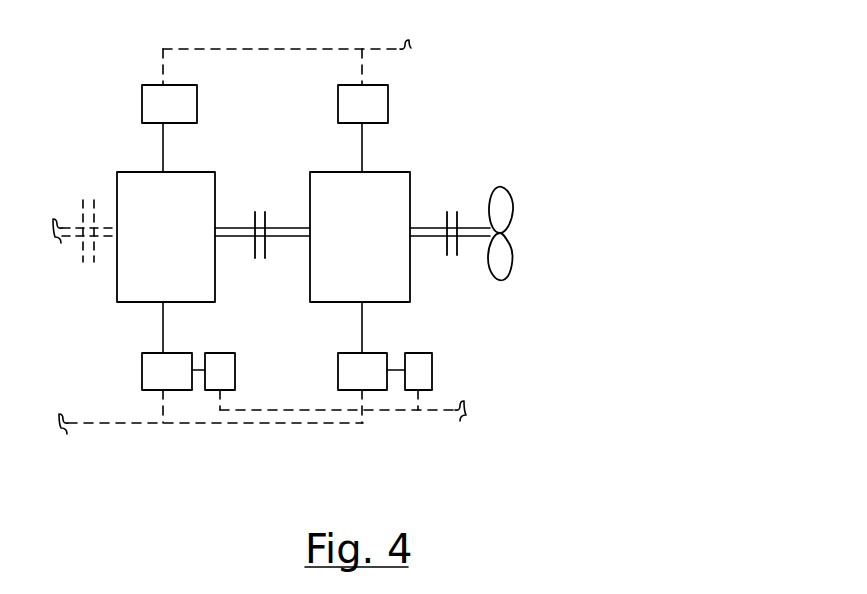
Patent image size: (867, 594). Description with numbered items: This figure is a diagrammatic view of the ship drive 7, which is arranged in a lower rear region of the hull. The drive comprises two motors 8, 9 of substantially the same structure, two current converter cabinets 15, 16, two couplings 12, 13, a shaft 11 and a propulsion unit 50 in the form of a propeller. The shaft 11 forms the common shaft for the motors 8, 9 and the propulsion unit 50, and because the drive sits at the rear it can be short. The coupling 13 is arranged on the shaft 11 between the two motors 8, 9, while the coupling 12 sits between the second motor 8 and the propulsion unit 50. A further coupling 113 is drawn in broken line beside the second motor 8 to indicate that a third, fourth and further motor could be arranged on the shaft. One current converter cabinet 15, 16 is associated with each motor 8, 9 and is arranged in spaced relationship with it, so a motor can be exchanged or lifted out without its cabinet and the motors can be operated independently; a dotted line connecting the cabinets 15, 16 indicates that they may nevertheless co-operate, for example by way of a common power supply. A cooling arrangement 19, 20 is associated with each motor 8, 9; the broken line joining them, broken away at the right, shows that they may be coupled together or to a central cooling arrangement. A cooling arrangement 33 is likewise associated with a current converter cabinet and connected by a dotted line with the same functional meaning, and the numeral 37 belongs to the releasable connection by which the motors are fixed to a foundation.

The ship drive 7 is at (680, 93).
The second motor 8 is at (128, 167).
The motor 9 is at (393, 165).
The shaft 11 is at (423, 247).
The coupling 12 is at (450, 198).
The coupling 13 is at (258, 192).
The current converter cabinet 15 is at (138, 380).
The current converter cabinet 16 is at (373, 350).
The cooling arrangement 19 is at (138, 103).
The cooling arrangement 20 is at (390, 103).
The cooling arrangement 33 is at (433, 370).
The releasable connection 37 is at (237, 368).
The propulsion unit 50 is at (522, 188).
The coupling 113 is at (85, 275).